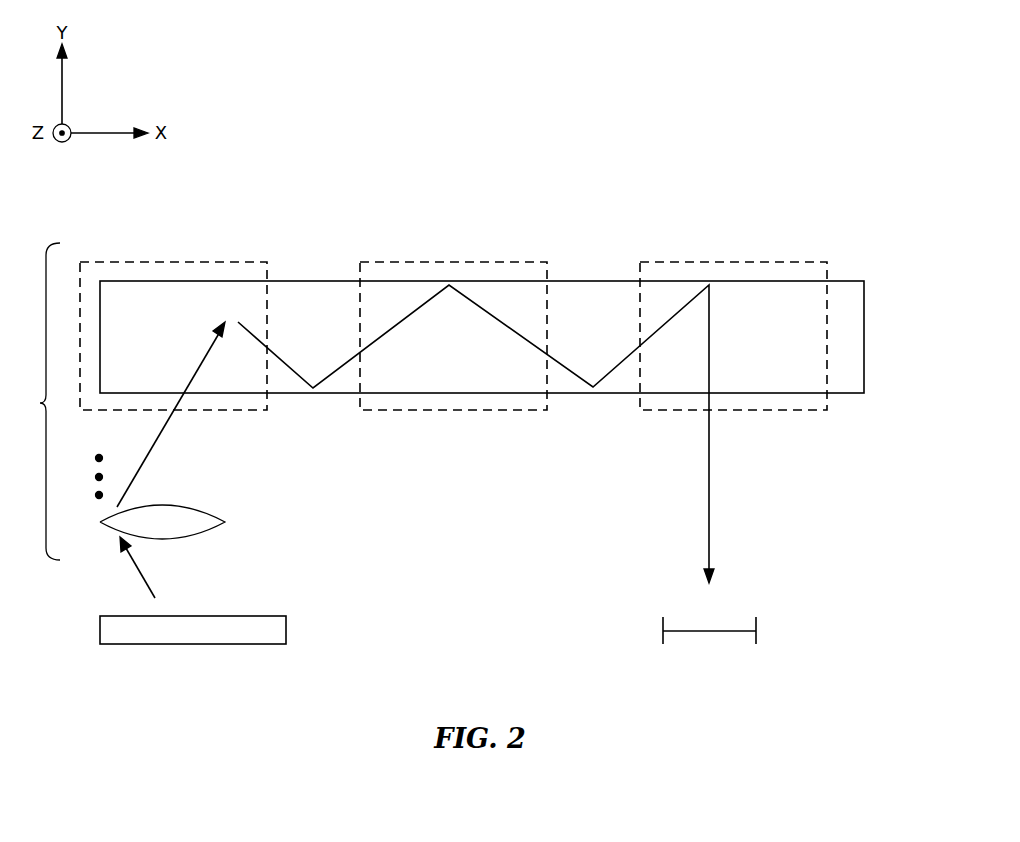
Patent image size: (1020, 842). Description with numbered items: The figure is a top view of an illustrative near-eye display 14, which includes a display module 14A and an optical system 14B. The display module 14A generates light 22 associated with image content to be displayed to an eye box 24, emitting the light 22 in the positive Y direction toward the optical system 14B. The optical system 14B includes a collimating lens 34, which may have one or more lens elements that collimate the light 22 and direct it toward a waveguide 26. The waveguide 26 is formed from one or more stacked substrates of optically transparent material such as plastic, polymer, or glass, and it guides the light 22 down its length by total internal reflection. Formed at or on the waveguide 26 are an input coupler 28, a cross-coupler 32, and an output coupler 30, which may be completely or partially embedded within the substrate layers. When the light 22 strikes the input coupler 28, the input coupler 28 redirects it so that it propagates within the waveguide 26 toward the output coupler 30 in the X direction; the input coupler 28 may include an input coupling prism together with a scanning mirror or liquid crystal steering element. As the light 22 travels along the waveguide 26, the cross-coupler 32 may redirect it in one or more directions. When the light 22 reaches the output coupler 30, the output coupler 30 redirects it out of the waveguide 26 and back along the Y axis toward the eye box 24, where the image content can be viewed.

The display 14 is at (698, 80).
The display module 14A is at (100, 628).
The optical system 14B is at (31, 401).
The light 22 is at (146, 573).
The eye box 24 is at (708, 632).
The waveguide 26 is at (864, 335).
The input coupler 28 is at (177, 262).
The output coupler 30 is at (733, 262).
The cross-coupler 32 is at (451, 262).
The collimating lens 34 is at (244, 528).